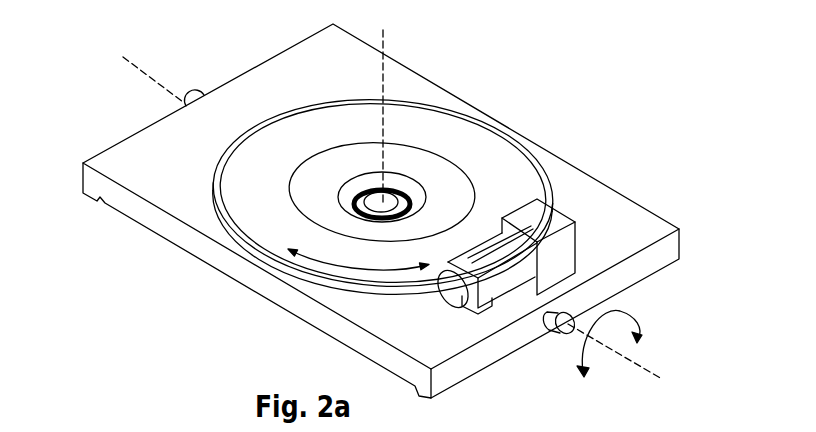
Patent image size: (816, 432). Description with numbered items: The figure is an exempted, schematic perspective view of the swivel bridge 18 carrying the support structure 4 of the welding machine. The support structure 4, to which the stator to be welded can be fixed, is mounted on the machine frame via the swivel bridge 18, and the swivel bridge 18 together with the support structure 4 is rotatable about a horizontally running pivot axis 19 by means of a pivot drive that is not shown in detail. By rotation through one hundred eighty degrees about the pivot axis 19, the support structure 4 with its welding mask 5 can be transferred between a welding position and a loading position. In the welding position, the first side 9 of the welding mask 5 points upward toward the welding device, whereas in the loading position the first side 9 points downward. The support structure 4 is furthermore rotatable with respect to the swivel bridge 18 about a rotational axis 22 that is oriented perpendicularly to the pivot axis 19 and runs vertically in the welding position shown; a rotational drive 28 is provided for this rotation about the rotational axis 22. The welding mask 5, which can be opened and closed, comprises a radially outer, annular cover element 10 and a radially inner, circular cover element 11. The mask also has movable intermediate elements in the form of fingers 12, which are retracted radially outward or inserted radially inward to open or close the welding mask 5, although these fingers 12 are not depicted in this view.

The support structure 4 is at (240, 213).
The welding mask 5 is at (619, 123).
The first side 9 is at (328, 167).
The annular cover element 10 is at (392, 158).
The circular cover element 11 is at (387, 205).
The fingers 12 is at (389, 196).
The swivel bridge 18 is at (163, 190).
The pivot axis 19 is at (165, 85).
The rotational axis 22 is at (384, 43).
The rotational drive 28 is at (548, 217).